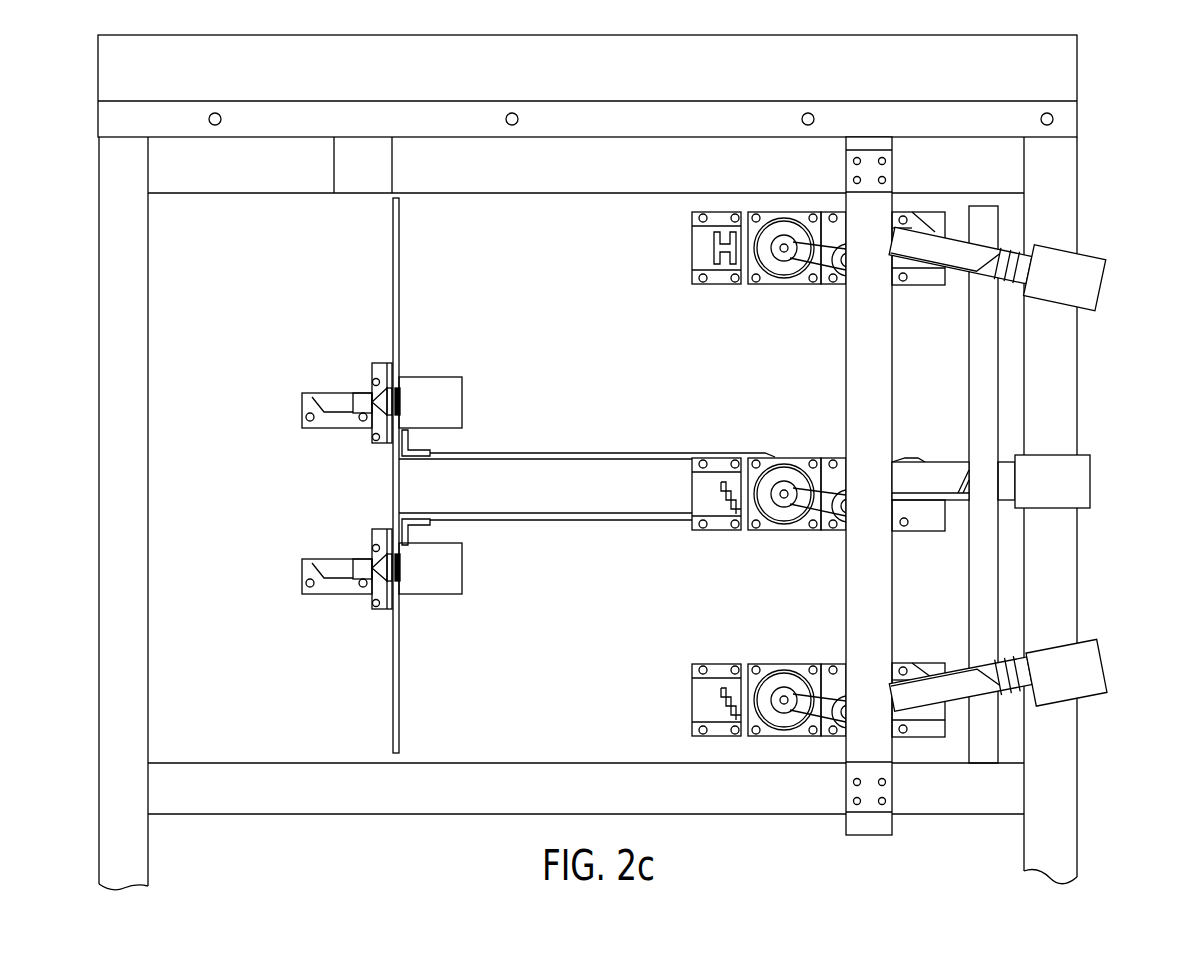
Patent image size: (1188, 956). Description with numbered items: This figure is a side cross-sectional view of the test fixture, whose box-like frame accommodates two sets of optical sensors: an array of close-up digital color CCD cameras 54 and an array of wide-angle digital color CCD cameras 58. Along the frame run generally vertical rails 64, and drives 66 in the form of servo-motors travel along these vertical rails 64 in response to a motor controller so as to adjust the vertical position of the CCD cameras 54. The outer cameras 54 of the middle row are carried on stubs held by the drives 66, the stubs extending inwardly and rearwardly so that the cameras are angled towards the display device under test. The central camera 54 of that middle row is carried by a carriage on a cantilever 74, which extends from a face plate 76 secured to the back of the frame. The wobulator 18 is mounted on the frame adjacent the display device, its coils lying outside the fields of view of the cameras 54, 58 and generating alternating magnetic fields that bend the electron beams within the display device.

The wobulator 18 is at (988, 547).
The close-up digital color CCD camera 54 is at (1098, 278).
The wide-angle digital color CCD camera 58 is at (434, 387).
The vertical rail 64 is at (876, 328).
The drive 66 is at (765, 664).
The cantilever 74 is at (600, 452).
The face plate 76 is at (400, 686).